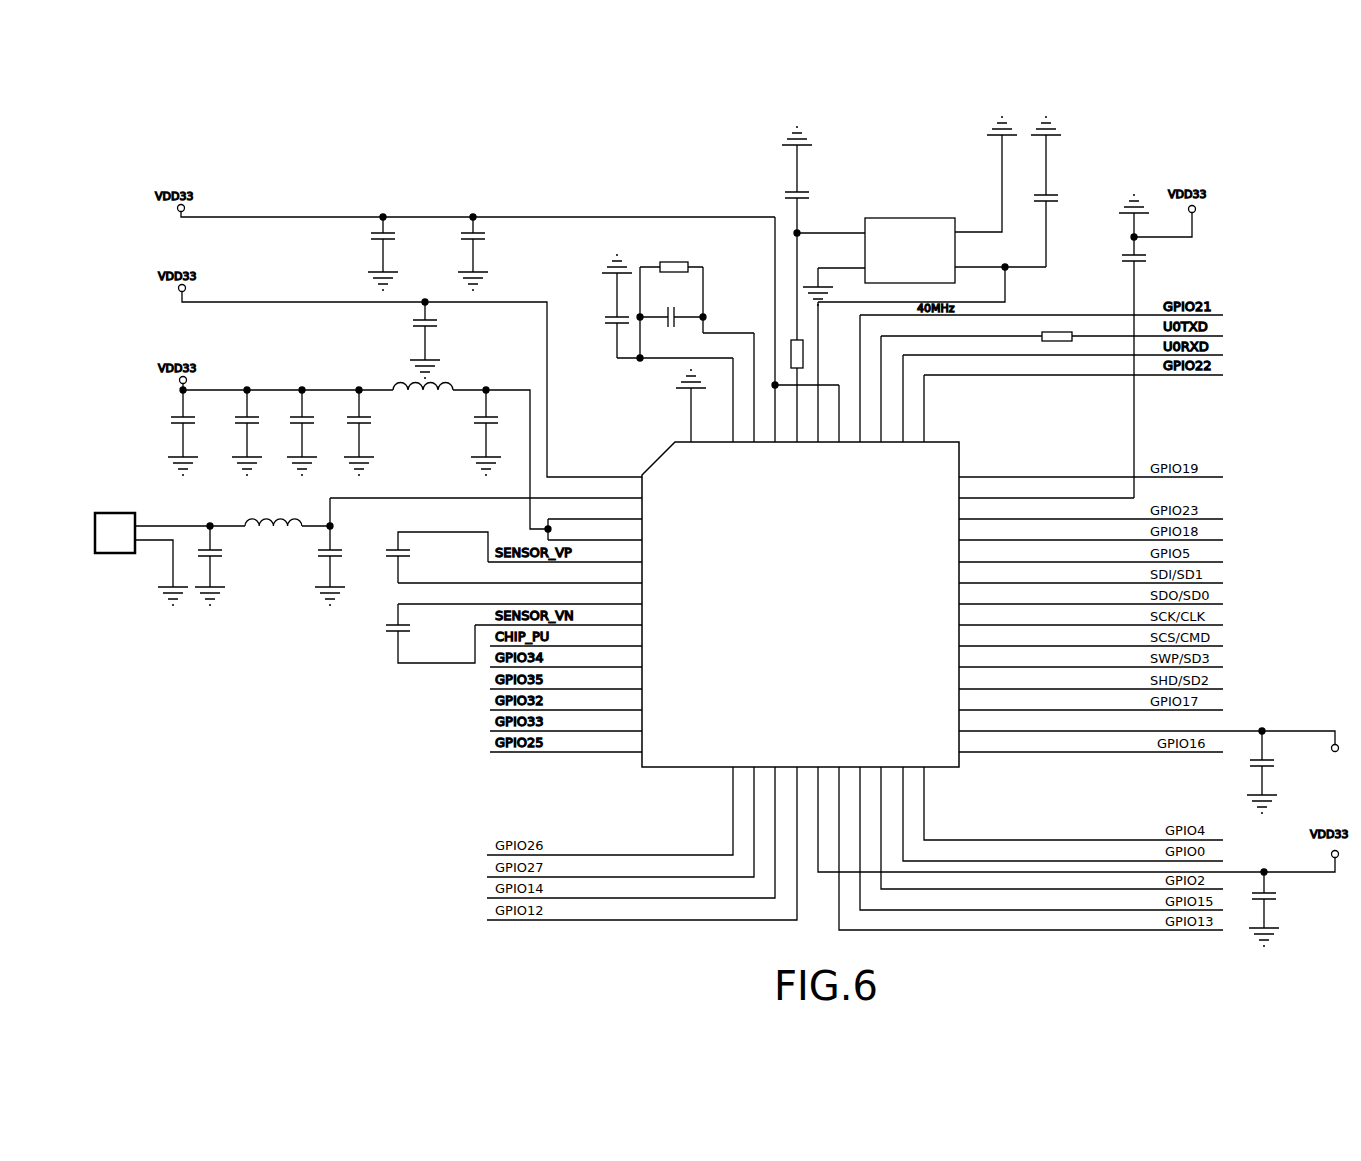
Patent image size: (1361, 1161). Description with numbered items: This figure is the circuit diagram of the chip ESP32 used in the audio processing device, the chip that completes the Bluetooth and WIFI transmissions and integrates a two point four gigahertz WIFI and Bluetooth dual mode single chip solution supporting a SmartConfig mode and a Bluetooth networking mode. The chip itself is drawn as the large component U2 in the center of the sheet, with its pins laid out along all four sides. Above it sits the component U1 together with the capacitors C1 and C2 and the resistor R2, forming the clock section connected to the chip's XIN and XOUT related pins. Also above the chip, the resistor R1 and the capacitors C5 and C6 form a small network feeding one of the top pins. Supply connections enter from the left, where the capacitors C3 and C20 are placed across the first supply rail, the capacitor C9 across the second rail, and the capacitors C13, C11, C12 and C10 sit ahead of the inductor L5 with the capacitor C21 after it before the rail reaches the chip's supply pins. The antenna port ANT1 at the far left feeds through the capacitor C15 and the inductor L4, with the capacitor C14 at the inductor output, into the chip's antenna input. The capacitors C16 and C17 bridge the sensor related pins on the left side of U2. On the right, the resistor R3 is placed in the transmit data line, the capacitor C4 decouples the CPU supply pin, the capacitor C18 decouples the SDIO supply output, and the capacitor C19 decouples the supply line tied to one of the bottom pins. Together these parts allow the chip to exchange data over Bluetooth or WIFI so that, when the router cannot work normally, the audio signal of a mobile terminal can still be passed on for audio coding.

The capacitor 22pF/6.3V C1 is at (767, 180).
The capacitor 22pF/6.3V C2 is at (1071, 192).
The capacitor 0.01UF C3 is at (399, 253).
The capacitor 0.1UF/6.3V C4 is at (1160, 346).
The capacitor 10NF/6V3 C5 is at (592, 306).
The capacitor 220P C6 is at (697, 308).
The capacitor 0.1UF/16V C9 is at (451, 340).
The capacitor 0.1uF/6.3V C10 is at (383, 432).
The capacitor 1uF/16V C11 is at (263, 432).
The capacitor NC C12 is at (312, 432).
The capacitor 10uF/10V C13 is at (200, 432).
The capacitor 2.7pF/50V C14 is at (352, 551).
The capacitor 2.0pF/50V C15 is at (237, 565).
The capacitor 270pF/6.3V C16 is at (437, 557).
The capacitor 270pF/6.3V C17 is at (430, 633).
The capacitor 1UF/16V C18 is at (1297, 772).
The capacitor 0.1uF/6V3 C19 is at (1301, 909).
The capacitor 1UF/16V C20 is at (494, 253).
The capacitor NC C21 is at (496, 432).
The resistor 20K R1 is at (694, 256).
The resistor 0R R2 is at (804, 358).
The resistor 499R R3 is at (1074, 329).
The inductor 2.7nH L4 is at (273, 521).
The inductor 2.0nH L5 is at (430, 388).
The 40MHz crystal oscillator U1 is at (908, 242).
The ESP32 module U2 is at (801, 608).
The PCB antenna ANT1 is at (118, 551).